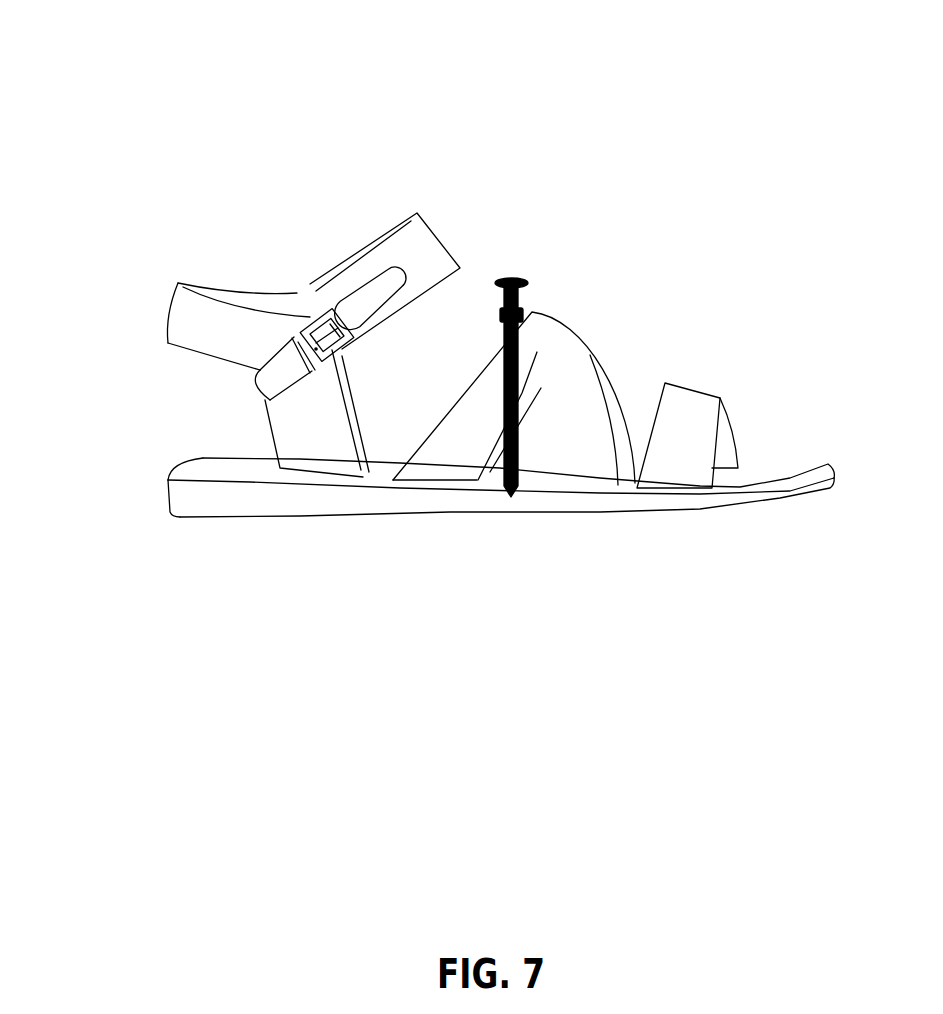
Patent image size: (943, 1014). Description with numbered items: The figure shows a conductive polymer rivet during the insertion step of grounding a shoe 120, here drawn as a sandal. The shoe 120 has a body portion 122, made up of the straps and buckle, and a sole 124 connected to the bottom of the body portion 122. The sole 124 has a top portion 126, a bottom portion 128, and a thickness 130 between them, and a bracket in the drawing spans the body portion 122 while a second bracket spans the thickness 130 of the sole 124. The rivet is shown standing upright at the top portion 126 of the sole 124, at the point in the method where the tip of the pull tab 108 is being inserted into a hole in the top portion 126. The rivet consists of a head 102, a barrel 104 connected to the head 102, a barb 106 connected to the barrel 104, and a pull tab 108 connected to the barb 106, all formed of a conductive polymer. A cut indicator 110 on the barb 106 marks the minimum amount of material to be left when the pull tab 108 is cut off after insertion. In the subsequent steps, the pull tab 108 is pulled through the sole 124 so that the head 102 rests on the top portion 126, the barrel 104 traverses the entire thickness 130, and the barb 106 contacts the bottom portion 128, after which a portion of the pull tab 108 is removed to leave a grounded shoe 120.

The head 102 is at (518, 278).
The barrel 104 is at (523, 297).
The barb 106 is at (532, 308).
The pull tab 108 is at (532, 347).
The cut indicator 110 is at (498, 330).
The shoe 120 is at (182, 109).
The body portion 122 is at (152, 243).
The sole 124 is at (238, 506).
The top portion 126 is at (231, 470).
The bottom portion 128 is at (322, 526).
The thickness 130 is at (152, 465).